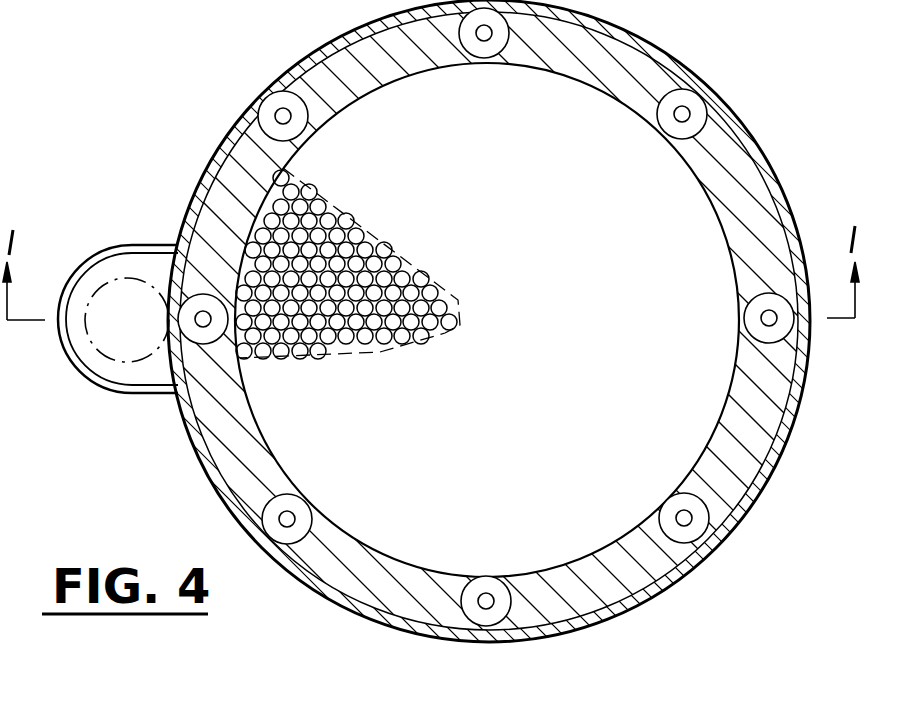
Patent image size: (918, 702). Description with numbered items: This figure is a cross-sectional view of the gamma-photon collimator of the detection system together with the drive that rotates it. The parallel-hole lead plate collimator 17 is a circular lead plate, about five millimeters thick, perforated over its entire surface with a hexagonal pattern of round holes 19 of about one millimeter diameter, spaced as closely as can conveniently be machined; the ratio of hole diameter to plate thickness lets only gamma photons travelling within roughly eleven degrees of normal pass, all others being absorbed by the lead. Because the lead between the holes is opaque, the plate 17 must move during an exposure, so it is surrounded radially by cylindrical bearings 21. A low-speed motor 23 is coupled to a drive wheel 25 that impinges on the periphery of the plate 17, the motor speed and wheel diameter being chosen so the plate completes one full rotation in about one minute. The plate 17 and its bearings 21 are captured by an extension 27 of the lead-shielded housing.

The parallel-hole lead plate collimator 17 is at (491, 513).
The round holes 19 is at (420, 340).
The cylindrical bearings 21 is at (757, 323).
The low-speed motor 23 is at (102, 363).
The drive wheel 25 is at (140, 353).
The extension of lead-shielded housing 27 is at (633, 67).